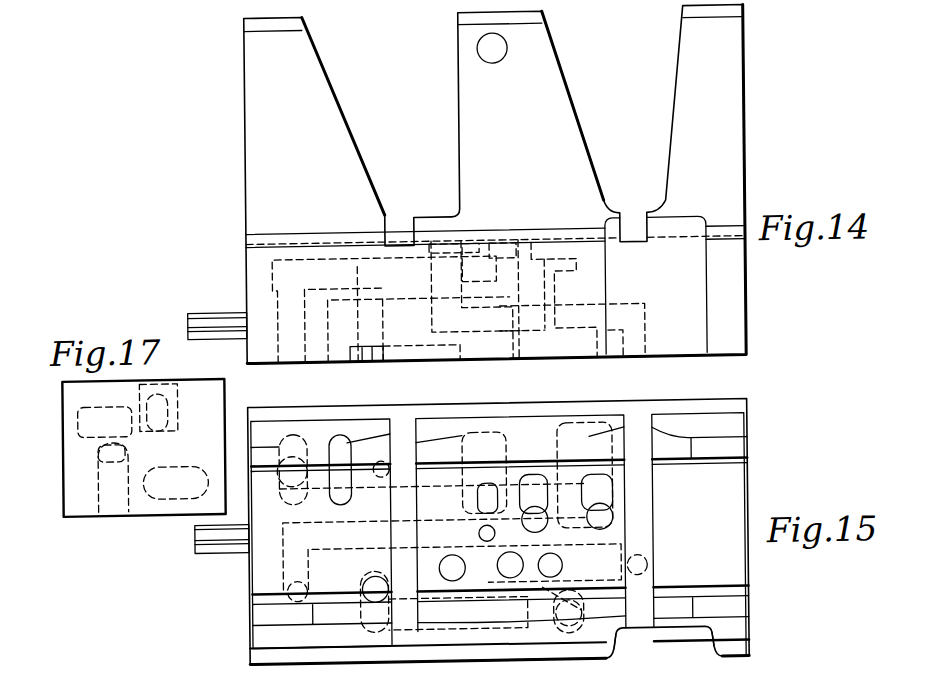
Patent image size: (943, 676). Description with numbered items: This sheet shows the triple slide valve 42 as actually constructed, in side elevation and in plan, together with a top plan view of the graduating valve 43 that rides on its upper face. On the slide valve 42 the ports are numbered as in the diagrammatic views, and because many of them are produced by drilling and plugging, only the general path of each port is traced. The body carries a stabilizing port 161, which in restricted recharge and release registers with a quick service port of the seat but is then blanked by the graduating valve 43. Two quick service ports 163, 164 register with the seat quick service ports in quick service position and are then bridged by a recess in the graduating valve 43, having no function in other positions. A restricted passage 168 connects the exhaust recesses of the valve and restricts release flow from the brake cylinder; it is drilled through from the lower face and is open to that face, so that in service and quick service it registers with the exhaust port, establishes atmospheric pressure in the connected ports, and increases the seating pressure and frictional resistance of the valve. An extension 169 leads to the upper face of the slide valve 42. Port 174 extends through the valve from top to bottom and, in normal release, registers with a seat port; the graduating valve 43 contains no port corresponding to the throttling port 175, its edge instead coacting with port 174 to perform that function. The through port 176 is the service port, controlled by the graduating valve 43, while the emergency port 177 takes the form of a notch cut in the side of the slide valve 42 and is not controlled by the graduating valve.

In FIG. 14, the slide valve 42 is at (247, 258).
In FIG. 15, the slide valve 42 is at (250, 574).
In FIG. 17, the graduating valve 43 is at (139, 500).
In FIG. 15, the stabilizing port 161 is at (477, 533).
In FIG. 15, the quick service port 163 is at (442, 577).
In FIG. 15, the quick service port 164 is at (561, 565).
In FIG. 14, the restricted passage 168 is at (372, 287).
In FIG. 15, the extension of port 167 169 is at (476, 508).
In FIG. 15, the port 174 is at (436, 562).
In FIG. 15, the throttling port 175 is at (525, 477).
In FIG. 15, the through port 176 is at (611, 502).
In FIG. 14, the emergency port 177 is at (700, 309).
In FIG. 15, the emergency port 177 is at (720, 633).